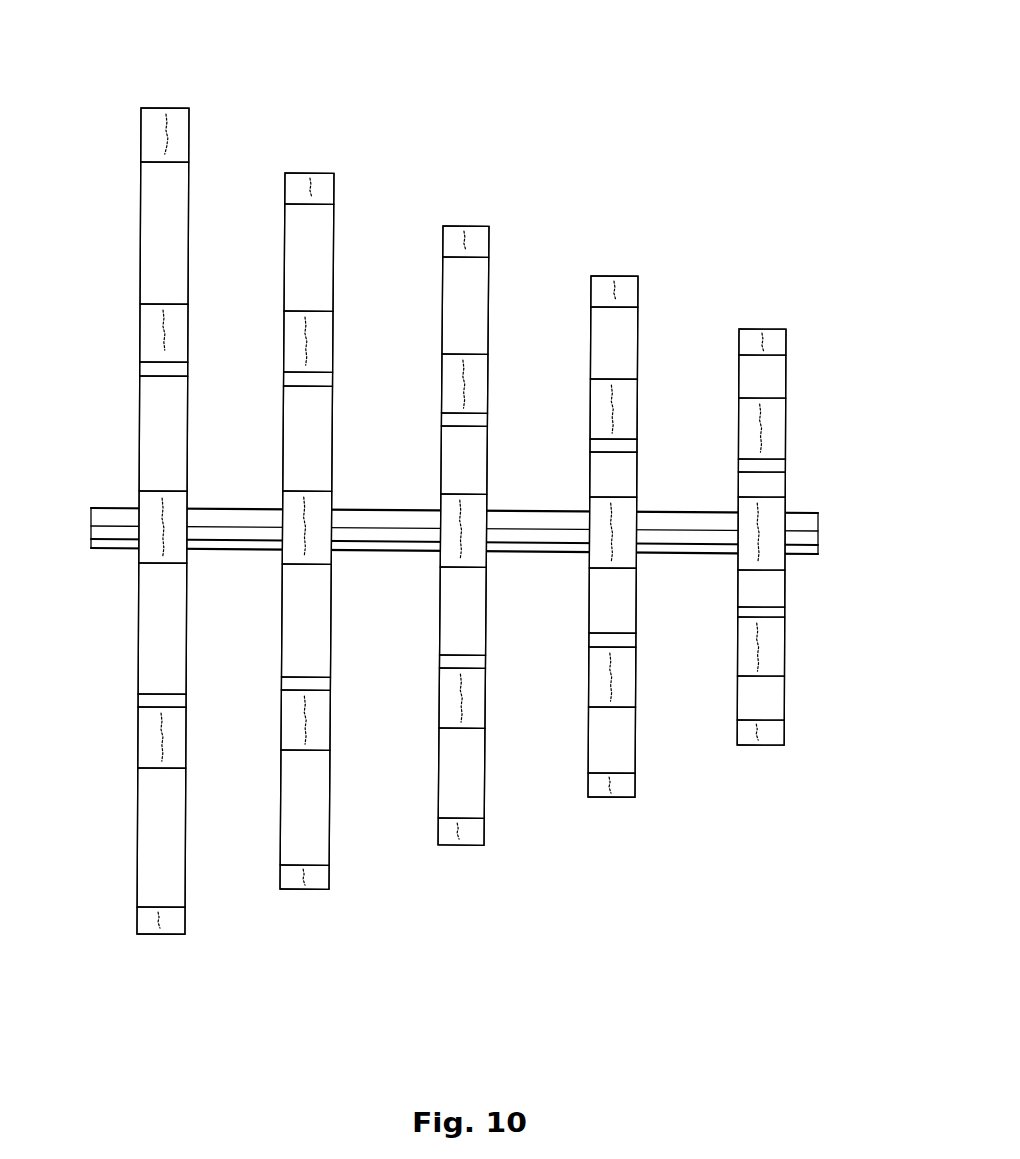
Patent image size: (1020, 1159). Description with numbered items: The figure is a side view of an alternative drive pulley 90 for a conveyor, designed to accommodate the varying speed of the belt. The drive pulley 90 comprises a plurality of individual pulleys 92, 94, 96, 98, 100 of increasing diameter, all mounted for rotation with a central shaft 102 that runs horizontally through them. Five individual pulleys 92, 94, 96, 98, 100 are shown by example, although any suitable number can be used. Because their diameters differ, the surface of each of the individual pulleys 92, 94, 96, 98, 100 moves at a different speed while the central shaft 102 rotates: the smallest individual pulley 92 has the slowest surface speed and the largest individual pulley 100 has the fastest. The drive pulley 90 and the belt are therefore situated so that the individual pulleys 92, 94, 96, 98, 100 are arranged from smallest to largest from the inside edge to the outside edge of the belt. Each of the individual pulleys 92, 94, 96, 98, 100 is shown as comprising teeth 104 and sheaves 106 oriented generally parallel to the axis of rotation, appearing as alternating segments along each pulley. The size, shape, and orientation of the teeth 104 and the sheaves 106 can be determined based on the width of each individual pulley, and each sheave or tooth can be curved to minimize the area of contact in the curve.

The drive pulley 90 is at (688, 82).
The individual pulley 92 is at (762, 324).
The individual pulley 94 is at (607, 270).
The individual pulley 96 is at (458, 219).
The individual pulley 98 is at (300, 168).
The individual pulley 100 is at (152, 103).
The central shaft 102 is at (91, 510).
The teeth 104 is at (150, 133).
The sheaves 106 is at (155, 238).